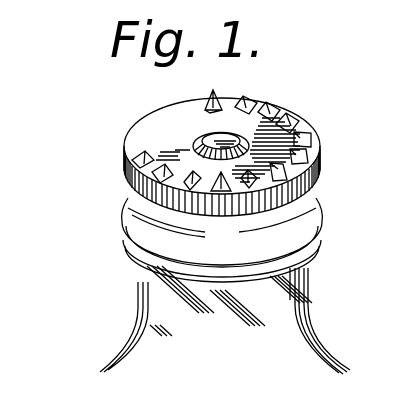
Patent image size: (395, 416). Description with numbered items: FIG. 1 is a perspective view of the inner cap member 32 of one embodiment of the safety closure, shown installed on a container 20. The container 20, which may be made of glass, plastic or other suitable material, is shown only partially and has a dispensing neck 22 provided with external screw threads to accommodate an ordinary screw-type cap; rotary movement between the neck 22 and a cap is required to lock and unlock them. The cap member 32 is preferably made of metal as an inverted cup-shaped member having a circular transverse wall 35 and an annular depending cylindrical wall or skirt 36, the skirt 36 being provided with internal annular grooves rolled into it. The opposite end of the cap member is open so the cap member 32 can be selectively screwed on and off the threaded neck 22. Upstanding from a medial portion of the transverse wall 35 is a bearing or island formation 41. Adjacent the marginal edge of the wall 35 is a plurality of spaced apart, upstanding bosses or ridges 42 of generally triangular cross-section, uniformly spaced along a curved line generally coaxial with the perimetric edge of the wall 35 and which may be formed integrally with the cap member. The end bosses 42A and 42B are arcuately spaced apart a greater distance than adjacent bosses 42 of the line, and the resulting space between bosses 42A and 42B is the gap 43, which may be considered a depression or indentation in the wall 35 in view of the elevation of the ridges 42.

The container 20 is at (98, 361).
The dispensing neck 22 is at (150, 316).
The inner cap member 32 is at (118, 139).
The circular transverse wall 35 is at (148, 118).
The annular depending cylindrical wall or skirt 36 is at (122, 224).
The bearing or island formation 41 is at (230, 135).
The upstanding bosses or ridges 42 is at (320, 155).
The end boss 42A is at (209, 93).
The end boss 42B is at (134, 158).
The gap 43 is at (185, 117).